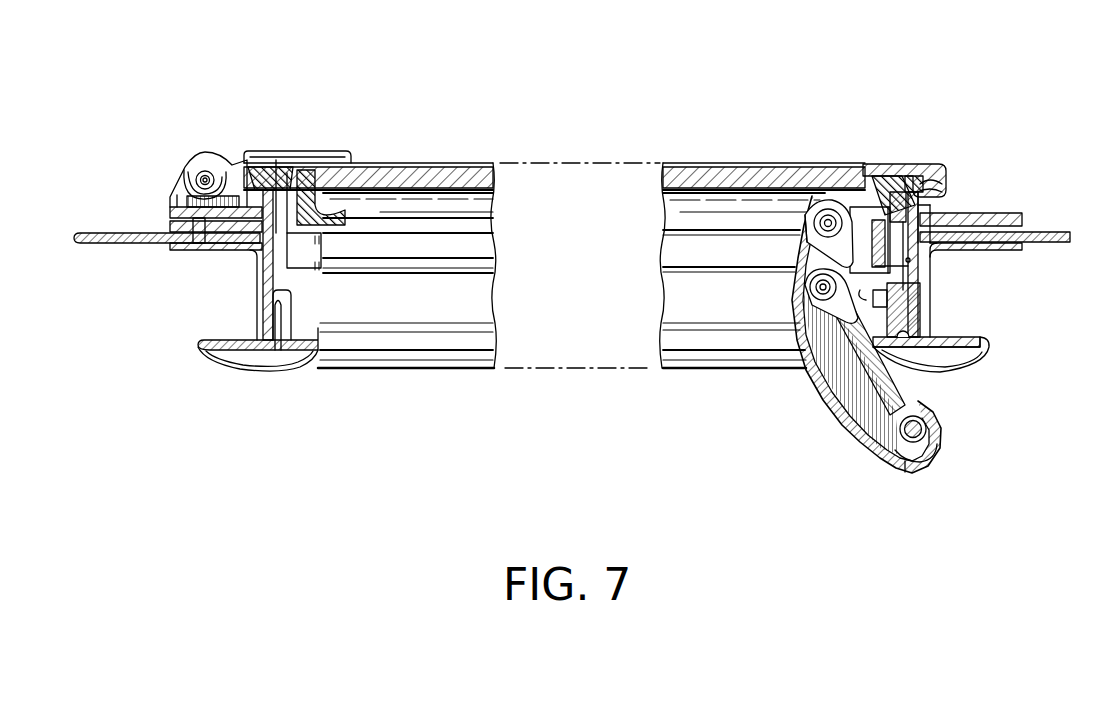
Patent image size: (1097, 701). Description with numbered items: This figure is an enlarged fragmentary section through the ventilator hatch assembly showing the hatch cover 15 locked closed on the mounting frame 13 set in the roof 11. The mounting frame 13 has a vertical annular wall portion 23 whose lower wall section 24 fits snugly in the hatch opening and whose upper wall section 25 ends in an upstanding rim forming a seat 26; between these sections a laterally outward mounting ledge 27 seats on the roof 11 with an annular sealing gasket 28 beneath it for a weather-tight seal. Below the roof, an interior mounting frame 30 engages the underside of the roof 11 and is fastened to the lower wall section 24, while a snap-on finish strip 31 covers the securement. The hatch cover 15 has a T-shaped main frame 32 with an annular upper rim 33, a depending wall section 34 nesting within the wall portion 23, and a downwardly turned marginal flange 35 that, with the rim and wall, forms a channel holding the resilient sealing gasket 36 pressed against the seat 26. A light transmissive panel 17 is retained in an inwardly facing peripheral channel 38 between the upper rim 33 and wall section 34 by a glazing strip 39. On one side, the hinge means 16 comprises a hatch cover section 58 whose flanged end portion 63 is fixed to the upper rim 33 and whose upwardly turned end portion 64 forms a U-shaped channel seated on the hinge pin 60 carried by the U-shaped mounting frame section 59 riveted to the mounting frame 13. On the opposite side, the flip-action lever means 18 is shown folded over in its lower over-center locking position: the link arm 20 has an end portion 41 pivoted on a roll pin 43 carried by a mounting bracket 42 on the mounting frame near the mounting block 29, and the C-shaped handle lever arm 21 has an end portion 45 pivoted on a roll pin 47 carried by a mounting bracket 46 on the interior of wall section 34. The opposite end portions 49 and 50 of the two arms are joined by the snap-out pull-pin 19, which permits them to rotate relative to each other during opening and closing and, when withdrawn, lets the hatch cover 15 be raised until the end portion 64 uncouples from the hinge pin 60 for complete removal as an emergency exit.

The roof 11 is at (115, 244).
The mounting frame 13 is at (512, 349).
The hatch cover 15 is at (427, 155).
The hinge means 16 is at (234, 150).
The light transmissive panel 17 is at (493, 182).
The flip-action lever means 18 is at (867, 456).
The pull-pin 19 is at (927, 430).
The link arm 20 is at (893, 407).
The lever arm component (handle) 21 is at (840, 418).
The annular wall portion 23 is at (300, 262).
The lower wall section 24 is at (910, 259).
The upper wall section 25 is at (921, 206).
The seat 26 is at (910, 185).
The mounting ledge 27 is at (170, 221).
The sealing gasket 28 is at (1023, 232).
The mounting block 29 is at (920, 285).
The interior mounting frame 30 is at (210, 248).
The finish strip 31 is at (257, 374).
The main frame 32 is at (887, 165).
The upper rim 33 is at (925, 165).
The wall section 34 is at (887, 183).
The marginal flange 35 is at (943, 185).
The sealing gasket 36 is at (943, 173).
The peripheral channel 38 is at (333, 213).
The glazing strip 39 is at (857, 203).
The end portion 41 is at (798, 287).
The mounting bracket 42 is at (887, 302).
The roll pin 43 is at (818, 302).
The end portion 45 is at (822, 208).
The mounting bracket 46 is at (912, 264).
The roll pin 47 is at (800, 215).
The end portion 49 is at (917, 472).
The end portion 50 is at (935, 453).
The hatch cover section 58 is at (267, 167).
The mounting frame section 59 is at (176, 185).
The hinge pin 60 is at (205, 172).
The flanged end portion 63 is at (313, 151).
The upwardly turned end portion 64 is at (190, 172).